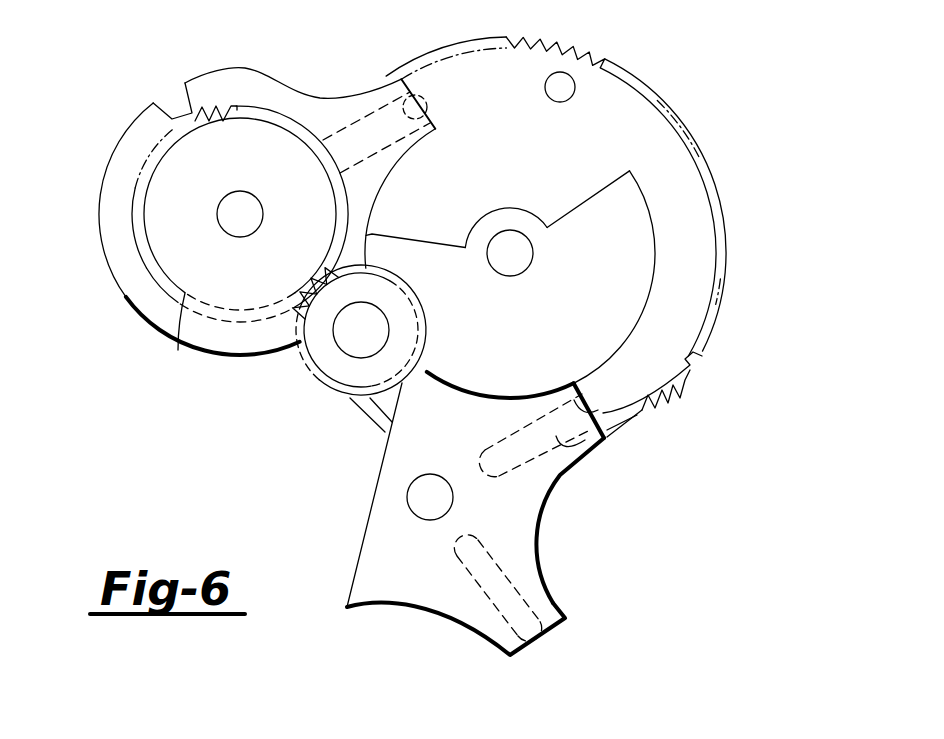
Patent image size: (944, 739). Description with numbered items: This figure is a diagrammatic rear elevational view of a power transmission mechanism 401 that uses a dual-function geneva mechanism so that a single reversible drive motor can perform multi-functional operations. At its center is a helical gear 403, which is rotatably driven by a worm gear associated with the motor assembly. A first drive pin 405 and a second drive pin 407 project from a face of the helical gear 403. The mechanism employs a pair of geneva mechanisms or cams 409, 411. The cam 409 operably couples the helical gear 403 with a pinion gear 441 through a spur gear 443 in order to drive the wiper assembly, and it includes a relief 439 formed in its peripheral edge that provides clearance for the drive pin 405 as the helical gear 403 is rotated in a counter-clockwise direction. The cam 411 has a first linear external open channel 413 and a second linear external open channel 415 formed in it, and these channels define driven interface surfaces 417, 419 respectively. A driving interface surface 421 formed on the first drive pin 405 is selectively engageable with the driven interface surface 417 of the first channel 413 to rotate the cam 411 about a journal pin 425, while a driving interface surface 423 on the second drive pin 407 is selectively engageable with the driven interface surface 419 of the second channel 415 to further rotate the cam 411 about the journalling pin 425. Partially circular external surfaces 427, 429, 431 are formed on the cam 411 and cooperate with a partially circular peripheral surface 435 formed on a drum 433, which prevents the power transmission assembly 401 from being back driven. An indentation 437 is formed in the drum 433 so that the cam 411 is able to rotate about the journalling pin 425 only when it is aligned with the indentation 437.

The power transmission mechanism 401 is at (626, 489).
The helical gear 403 is at (696, 152).
The first drive pin 405 is at (570, 82).
The second drive pin 407 is at (423, 92).
The cam 409 is at (233, 85).
The cam 411 is at (480, 529).
The first linear external open channel 413 is at (610, 442).
The second linear external open channel 415 is at (542, 637).
The driven interface surface 417 is at (698, 368).
The driven interface surface 419 is at (560, 600).
The driving interface surface 421 is at (567, 103).
The driving interface surface 423 is at (430, 108).
The journal pin 425 is at (410, 497).
The partially circular external surface 427 is at (448, 388).
The partially circular external surface 429 is at (547, 543).
The partially circular external surface 431 is at (420, 605).
The drum 433 is at (591, 256).
The partially circular peripheral surface 435 is at (656, 250).
The indentation 437 is at (415, 241).
The relief 439 is at (155, 102).
The pinion gear 441 is at (325, 362).
The spur gear 443 is at (180, 337).